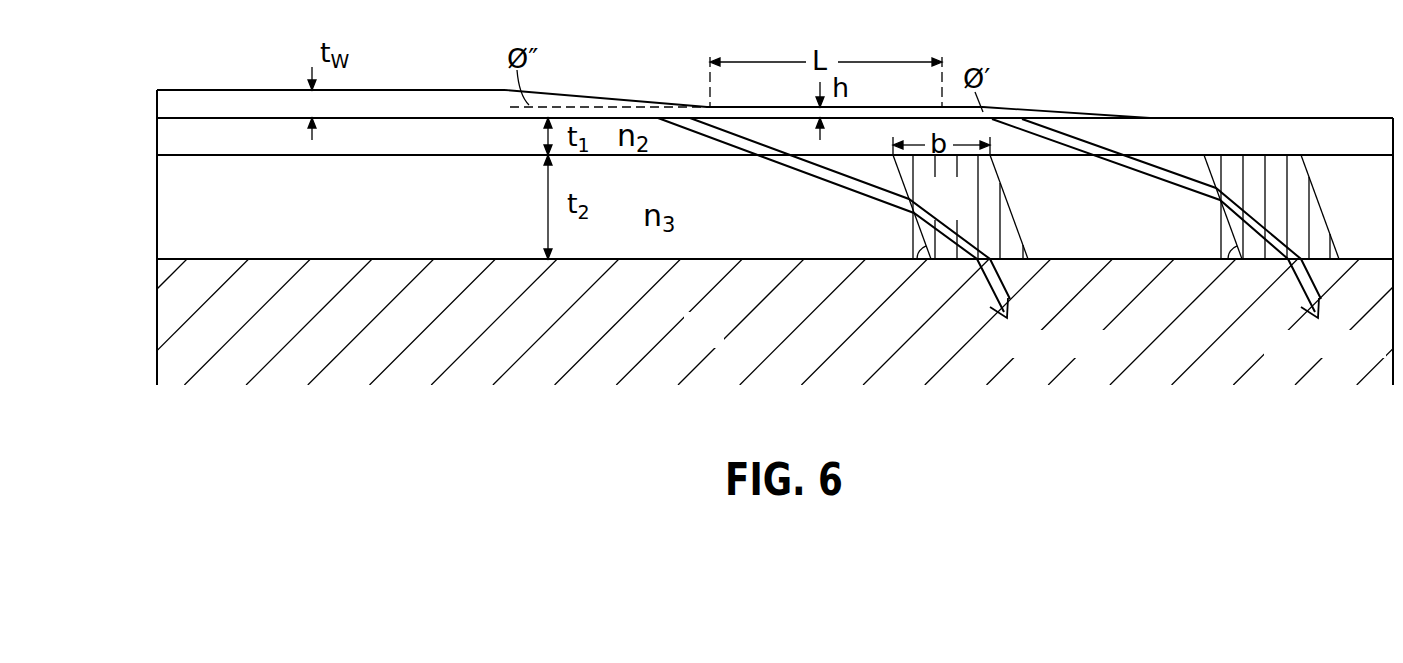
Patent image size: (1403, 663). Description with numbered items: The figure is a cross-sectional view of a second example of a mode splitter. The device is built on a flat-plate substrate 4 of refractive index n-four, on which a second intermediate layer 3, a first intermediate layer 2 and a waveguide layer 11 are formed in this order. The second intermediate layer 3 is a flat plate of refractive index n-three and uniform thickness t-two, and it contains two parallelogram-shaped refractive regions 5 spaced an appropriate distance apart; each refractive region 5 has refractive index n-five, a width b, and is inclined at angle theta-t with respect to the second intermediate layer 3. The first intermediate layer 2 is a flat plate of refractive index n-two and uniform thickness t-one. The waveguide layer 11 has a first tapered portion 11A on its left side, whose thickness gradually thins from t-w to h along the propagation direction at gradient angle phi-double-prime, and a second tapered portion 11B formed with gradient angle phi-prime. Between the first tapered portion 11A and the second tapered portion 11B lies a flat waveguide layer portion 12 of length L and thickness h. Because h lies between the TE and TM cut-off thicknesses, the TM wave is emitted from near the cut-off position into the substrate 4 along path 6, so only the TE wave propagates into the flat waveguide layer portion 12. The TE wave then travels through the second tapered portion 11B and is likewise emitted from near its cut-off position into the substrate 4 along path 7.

The first intermediate layer 2 is at (173, 142).
The second intermediate layer 3 is at (173, 203).
The substrate 4 is at (172, 317).
The refractive region 5 is at (1003, 207).
The path 6 is at (818, 182).
The path 7 is at (1142, 182).
The waveguide layer 11 is at (192, 107).
The first tapered portion 11A is at (620, 97).
The second tapered portion 11B is at (1080, 112).
The flat waveguide layer portion 12 is at (892, 107).